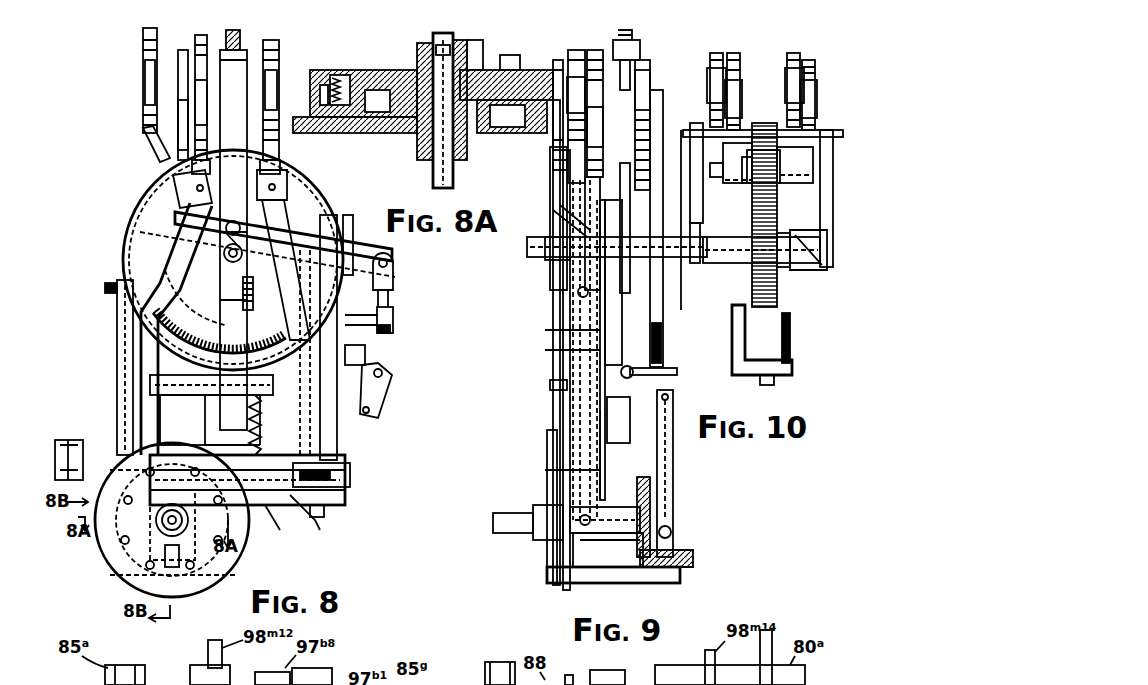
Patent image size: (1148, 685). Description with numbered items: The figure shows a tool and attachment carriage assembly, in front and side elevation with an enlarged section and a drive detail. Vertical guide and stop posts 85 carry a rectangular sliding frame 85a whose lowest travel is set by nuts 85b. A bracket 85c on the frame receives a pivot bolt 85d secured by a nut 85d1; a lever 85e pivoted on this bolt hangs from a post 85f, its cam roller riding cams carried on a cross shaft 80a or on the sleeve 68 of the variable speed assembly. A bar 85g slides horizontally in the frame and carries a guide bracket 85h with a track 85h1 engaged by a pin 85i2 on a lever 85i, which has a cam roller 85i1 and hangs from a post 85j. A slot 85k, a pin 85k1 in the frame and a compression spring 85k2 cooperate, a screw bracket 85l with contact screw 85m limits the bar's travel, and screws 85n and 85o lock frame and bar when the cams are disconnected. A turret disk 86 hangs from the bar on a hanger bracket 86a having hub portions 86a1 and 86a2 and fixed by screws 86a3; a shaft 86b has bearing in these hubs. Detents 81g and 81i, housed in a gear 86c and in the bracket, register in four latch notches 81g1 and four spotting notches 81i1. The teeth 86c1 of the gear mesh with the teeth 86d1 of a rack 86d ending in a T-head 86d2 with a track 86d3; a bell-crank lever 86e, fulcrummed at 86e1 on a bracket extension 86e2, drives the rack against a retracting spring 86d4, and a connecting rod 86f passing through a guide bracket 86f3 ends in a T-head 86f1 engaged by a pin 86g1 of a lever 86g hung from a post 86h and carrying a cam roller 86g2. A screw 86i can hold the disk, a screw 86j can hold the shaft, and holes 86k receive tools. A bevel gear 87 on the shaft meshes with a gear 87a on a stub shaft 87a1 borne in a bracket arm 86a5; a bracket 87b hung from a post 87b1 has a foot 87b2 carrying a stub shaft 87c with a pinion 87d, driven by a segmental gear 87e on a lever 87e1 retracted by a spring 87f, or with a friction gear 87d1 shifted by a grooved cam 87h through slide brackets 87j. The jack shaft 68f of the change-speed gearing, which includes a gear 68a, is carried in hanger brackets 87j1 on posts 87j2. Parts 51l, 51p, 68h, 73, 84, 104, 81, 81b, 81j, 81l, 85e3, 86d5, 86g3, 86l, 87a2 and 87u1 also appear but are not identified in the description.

In FIG. 8, the link 51l is at (152, 188).
In FIG. 8, the slide rod 51p is at (143, 90).
In FIG. 10, the sleeve 68 is at (752, 260).
In FIG. 10, the gear 68a is at (768, 288).
In FIG. 10, the jack shaft 68f is at (730, 185).
In FIG. 10, the hub 68h is at (752, 200).
In FIG. 8A, the sleeve 73 is at (525, 145).
In FIG. 8A, the rod 84 is at (540, 140).
In FIG. 8A, the bushing 104 is at (498, 162).
In FIG. 9, the cross shaft 80a is at (527, 247).
In FIG. 9, the rack 81 is at (652, 508).
In FIG. 8, the column 81b is at (239, 98).
In FIG. 8A, the detent 81g is at (390, 133).
In FIG. 9, the detent 81g is at (665, 310).
In FIG. 10, the detent 81g is at (791, 330).
In FIG. 8A, the latch notches 81g1 is at (507, 160).
In FIG. 10, the latch notches 81g1 is at (713, 268).
In FIG. 8, the detent 81i is at (125, 561).
In FIG. 9, the detent 81i is at (618, 526).
In FIG. 10, the detent 81i is at (820, 216).
In FIG. 8, the spotting notches 81i1 is at (110, 560).
In FIG. 9, the guide 81j is at (680, 150).
In FIG. 8A, the base 81l is at (330, 133).
In FIG. 8, the vertical guide and stop posts 85 is at (126, 195).
In FIG. 9, the vertical guide and stop posts 85 is at (553, 225).
In FIG. 8, the frame 85a is at (118, 303).
In FIG. 9, the frame 85a is at (600, 455).
In FIG. 8, the nuts 85b is at (324, 512).
In FIG. 8, the bracket 85c is at (393, 318).
In FIG. 8, the pivot bolt 85d is at (393, 275).
In FIG. 8, the nut 85d1 is at (393, 327).
In FIG. 8, the lever 85e is at (340, 228).
In FIG. 9, the lever 85e is at (565, 240).
In FIG. 9, the pin 85e3 is at (600, 308).
In FIG. 8, the post 85f is at (143, 40).
In FIG. 9, the post 85f is at (597, 50).
In FIG. 8, the bar 85g is at (350, 473).
In FIG. 9, the bar 85g is at (560, 432).
In FIG. 8, the vertical guide bracket 85h is at (145, 431).
In FIG. 8, the track 85h1 is at (120, 420).
In FIG. 8, the lever 85i is at (127, 262).
In FIG. 9, the lever 85i is at (553, 306).
In FIG. 8, the cam roller 85i1 is at (130, 243).
In FIG. 9, the cam roller 85i1 is at (560, 260).
In FIG. 8, the pin 85i2 is at (128, 393).
In FIG. 8, the post 85j is at (200, 42).
In FIG. 9, the post 85j is at (577, 50).
In FIG. 8, the slot 85k is at (295, 520).
In FIG. 8, the pin 85k1 is at (318, 522).
In FIG. 8, the compression spring 85k2 is at (335, 486).
In FIG. 8, the screw bracket 85l is at (60, 452).
In FIG. 8, the contact screw 85m is at (58, 440).
In FIG. 8, the screw 85n is at (106, 289).
In FIG. 9, the screw 85n is at (578, 292).
In FIG. 8, the screw 85o is at (262, 510).
In FIG. 8, the turret disk 86 is at (246, 556).
In FIG. 8A, the turret disk 86 is at (346, 133).
In FIG. 9, the turret disk 86 is at (545, 578).
In FIG. 8A, the hanger bracket 86a is at (313, 95).
In FIG. 9, the hanger bracket 86a is at (560, 462).
In FIG. 8A, the hub portion 86a1 is at (420, 160).
In FIG. 9, the hub portion 86a1 is at (550, 490).
In FIG. 8A, the hub portion 86a2 is at (428, 50).
In FIG. 9, the hub portion 86a2 is at (575, 585).
In FIG. 9, the screws 86a3 is at (540, 445).
In FIG. 9, the bracket arm 86a5 is at (615, 583).
In FIG. 8A, the shaft 86b is at (442, 180).
In FIG. 9, the shaft 86b is at (498, 513).
In FIG. 8A, the gear 86c is at (390, 75).
In FIG. 8A, the teeth 86c1 is at (362, 72).
In FIG. 8, the rack 86d is at (202, 409).
In FIG. 8A, the rack 86d is at (520, 70).
In FIG. 8A, the teeth 86d1 is at (505, 65).
In FIG. 8, the T-head 86d2 is at (200, 380).
In FIG. 9, the T-head 86d2 is at (550, 385).
In FIG. 8, the track 86d3 is at (137, 372).
In FIG. 8, the retracting spring 86d4 is at (260, 441).
In FIG. 8, the spring seat 86d5 is at (258, 418).
In FIG. 8, the bell-crank lever 86e is at (390, 388).
In FIG. 9, the bell-crank lever 86e is at (650, 432).
In FIG. 8, the fulcrum 86e1 is at (372, 418).
In FIG. 8, the bracket extension 86e2 is at (360, 428).
In FIG. 9, the bracket extension 86e2 is at (553, 400).
In FIG. 8, the connecting rod 86f is at (357, 370).
In FIG. 8, the T-head 86f1 is at (338, 349).
In FIG. 8, the guide bracket 86f3 is at (392, 368).
In FIG. 9, the guide bracket 86f3 is at (560, 345).
In FIG. 8, the lever 86g is at (233, 291).
In FIG. 9, the lever 86g is at (660, 190).
In FIG. 8, the pin 86g1 is at (309, 193).
In FIG. 8, the cam roller 86g2 is at (299, 208).
In FIG. 9, the pivot arm 86g3 is at (570, 370).
In FIG. 8, the post 86h is at (280, 48).
In FIG. 9, the post 86h is at (651, 70).
In FIG. 8A, the screw 86i is at (345, 72).
In FIG. 8A, the screw 86j is at (478, 42).
In FIG. 9, the screw 86j is at (592, 505).
In FIG. 8, the holes 86k is at (192, 567).
In FIG. 8, the pin 86l is at (115, 575).
In FIG. 9, the bevel gear 87 is at (669, 277).
In FIG. 9, the gear 87a is at (695, 558).
In FIG. 9, the stub shaft 87a1 is at (675, 578).
In FIG. 9, the pin 87a2 is at (673, 480).
In FIG. 9, the bracket 87b is at (634, 125).
In FIG. 10, the bracket 87b is at (758, 340).
In FIG. 8, the post 87b1 is at (242, 48).
In FIG. 9, the post 87b1 is at (636, 42).
In FIG. 9, the foot 87b2 is at (668, 378).
In FIG. 10, the foot 87b2 is at (774, 381).
In FIG. 9, the stub shaft 87c is at (670, 392).
In FIG. 9, the pinion gear 87d is at (668, 365).
In FIG. 10, the friction gear 87d1 is at (792, 368).
In FIG. 8, the segmental gear 87e is at (192, 345).
In FIG. 9, the segmental gear 87e is at (665, 345).
In FIG. 9, the lever 87e1 is at (673, 440).
In FIG. 8, the spring 87f is at (234, 311).
In FIG. 10, the grooved cam 87h is at (826, 272).
In FIG. 10, the supporting brackets 87j is at (710, 100).
In FIG. 10, the hanger brackets 87j1 is at (792, 183).
In FIG. 10, the posts 87j2 is at (733, 53).
In FIG. 10, the arm 87u1 is at (727, 215).